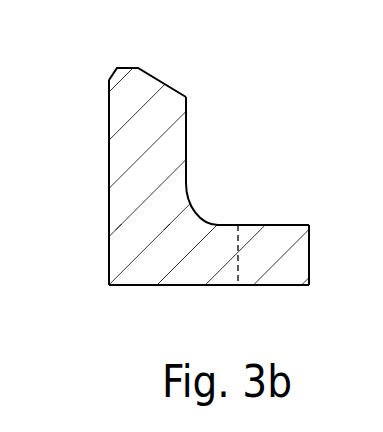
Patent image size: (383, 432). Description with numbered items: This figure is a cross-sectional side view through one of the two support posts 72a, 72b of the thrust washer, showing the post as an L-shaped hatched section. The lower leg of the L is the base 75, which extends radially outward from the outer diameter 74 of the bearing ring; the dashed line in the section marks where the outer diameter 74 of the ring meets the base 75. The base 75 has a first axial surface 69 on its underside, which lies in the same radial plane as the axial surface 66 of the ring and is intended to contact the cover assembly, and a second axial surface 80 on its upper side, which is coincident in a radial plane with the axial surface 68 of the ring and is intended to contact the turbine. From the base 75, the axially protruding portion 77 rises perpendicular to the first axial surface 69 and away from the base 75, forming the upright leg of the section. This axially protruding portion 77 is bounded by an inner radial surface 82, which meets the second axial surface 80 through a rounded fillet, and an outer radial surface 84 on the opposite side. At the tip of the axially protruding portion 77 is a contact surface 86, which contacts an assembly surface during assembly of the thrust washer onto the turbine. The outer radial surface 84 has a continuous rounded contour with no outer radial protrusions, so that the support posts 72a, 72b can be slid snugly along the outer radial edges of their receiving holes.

The support post 72a is at (238, 96).
The support post 72b is at (191, 177).
The axially protruding portion 77 is at (127, 107).
The base 75 is at (220, 262).
The outer radial surface 84 is at (110, 150).
The contact surface 86 is at (126, 68).
The inner radial surface 82 is at (187, 148).
The second axial surface 80 is at (218, 223).
The axial surface of ring 68 is at (286, 223).
The axial surface of ring 66 is at (295, 287).
The first axial surface 69 is at (223, 287).
The outer diameter 74 is at (240, 268).